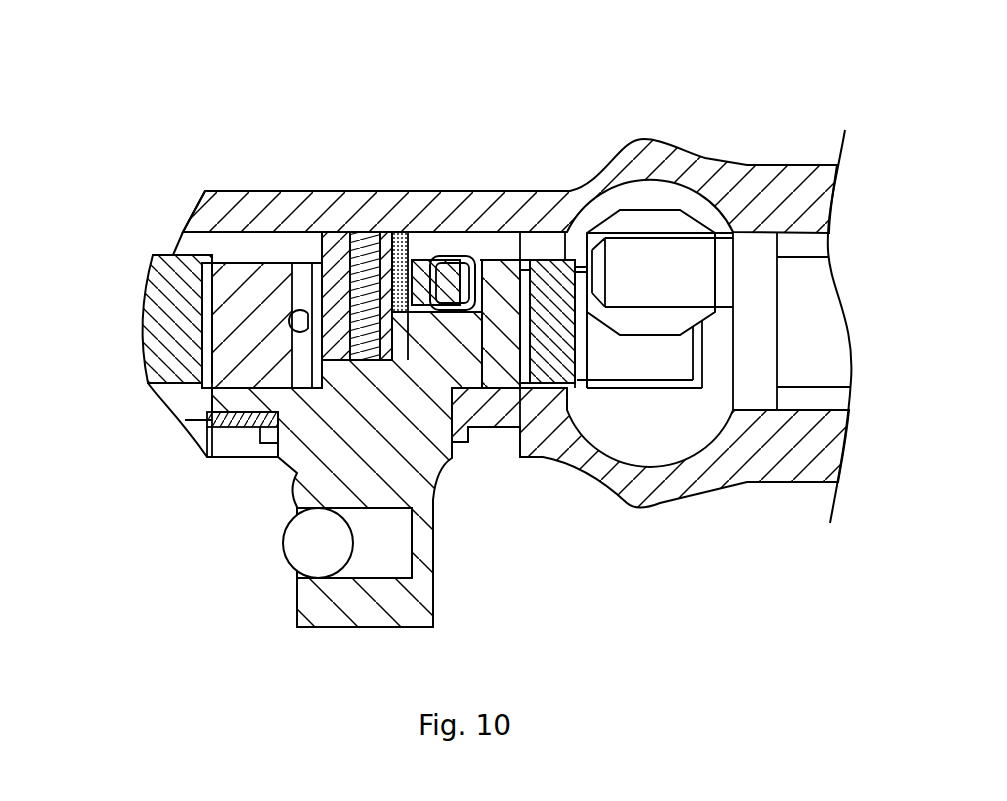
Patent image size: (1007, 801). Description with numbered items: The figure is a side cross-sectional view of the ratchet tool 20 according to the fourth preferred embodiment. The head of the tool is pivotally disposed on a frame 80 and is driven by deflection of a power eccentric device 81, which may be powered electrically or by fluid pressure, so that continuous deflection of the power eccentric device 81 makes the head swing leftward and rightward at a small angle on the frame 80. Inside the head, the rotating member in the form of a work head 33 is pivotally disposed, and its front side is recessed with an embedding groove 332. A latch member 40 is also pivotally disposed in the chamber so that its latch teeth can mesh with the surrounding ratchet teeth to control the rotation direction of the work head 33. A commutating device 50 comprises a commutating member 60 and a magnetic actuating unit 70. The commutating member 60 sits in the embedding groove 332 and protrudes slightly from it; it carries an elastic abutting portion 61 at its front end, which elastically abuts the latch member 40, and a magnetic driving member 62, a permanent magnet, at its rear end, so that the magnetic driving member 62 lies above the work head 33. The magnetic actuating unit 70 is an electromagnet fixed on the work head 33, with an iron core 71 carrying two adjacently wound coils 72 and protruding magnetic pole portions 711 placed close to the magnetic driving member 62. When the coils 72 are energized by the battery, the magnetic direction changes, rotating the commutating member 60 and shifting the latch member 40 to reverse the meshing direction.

The ratchet tool 20 is at (750, 150).
The work head 33 is at (425, 593).
The embedding groove 332 is at (337, 360).
The latch member 40 is at (227, 333).
The commutating device 50 is at (494, 255).
The commutating member 60 is at (333, 237).
The elastic abutting portion 61 is at (303, 327).
The magnetic driving member 62 is at (400, 245).
The magnetic actuating unit 70 is at (451, 247).
The iron core 71 is at (423, 298).
The magnetic pole portion 711 is at (430, 263).
The coil 72 is at (470, 262).
The frame 80 is at (230, 191).
The power eccentric device 81 is at (666, 262).